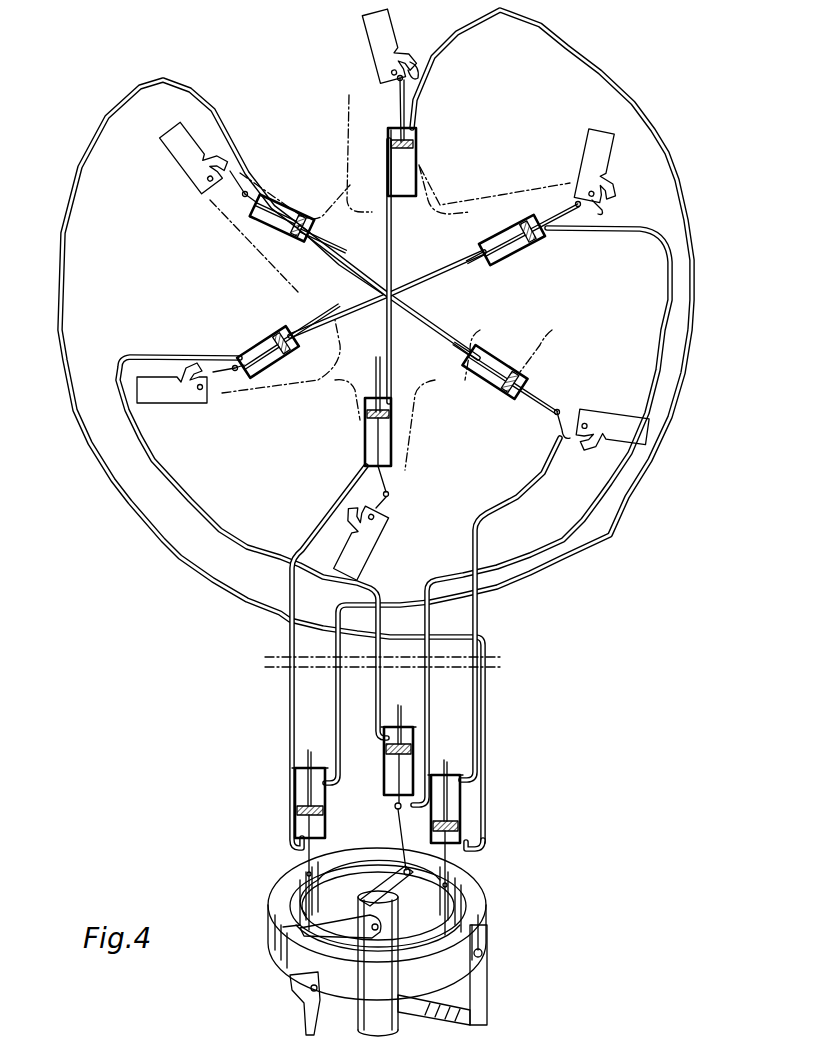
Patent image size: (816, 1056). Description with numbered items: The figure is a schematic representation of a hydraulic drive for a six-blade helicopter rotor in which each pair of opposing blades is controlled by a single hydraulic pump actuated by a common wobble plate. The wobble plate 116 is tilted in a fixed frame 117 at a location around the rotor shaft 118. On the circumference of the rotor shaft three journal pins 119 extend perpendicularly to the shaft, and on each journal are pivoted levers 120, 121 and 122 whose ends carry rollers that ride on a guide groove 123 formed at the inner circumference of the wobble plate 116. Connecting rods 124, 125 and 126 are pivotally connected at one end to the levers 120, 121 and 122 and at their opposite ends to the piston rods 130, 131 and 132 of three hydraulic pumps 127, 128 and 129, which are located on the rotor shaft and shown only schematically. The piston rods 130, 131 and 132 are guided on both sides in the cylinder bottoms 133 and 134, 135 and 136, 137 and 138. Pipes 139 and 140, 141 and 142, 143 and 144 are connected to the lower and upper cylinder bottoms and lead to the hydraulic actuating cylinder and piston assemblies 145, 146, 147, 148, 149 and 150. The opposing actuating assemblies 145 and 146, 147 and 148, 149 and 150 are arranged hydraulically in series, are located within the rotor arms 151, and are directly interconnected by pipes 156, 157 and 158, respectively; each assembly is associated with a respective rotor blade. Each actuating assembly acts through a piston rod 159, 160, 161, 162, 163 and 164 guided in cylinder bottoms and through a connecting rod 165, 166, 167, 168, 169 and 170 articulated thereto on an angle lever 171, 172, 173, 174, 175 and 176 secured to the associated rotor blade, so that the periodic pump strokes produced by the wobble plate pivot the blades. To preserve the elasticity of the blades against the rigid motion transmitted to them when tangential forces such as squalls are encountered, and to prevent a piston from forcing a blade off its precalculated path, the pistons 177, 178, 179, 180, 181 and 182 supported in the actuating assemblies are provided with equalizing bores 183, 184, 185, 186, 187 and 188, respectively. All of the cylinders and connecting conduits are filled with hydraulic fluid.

The wobble plate 116 is at (278, 900).
The fixed frame 117 is at (487, 978).
The rotor shaft 118 is at (372, 1026).
The journal pins 119 is at (380, 934).
The lever 120 is at (352, 930).
The lever 121 is at (425, 888).
The lever 122 is at (484, 952).
The guide groove 123 is at (358, 876).
The connecting rod 124 is at (300, 927).
The connecting rod 125 is at (402, 845).
The connecting rod 126 is at (468, 915).
The hydraulic pump 127 is at (295, 781).
The hydraulic pump 128 is at (385, 766).
The hydraulic pump 129 is at (462, 796).
The piston rod 130 is at (304, 850).
The piston rod 131 is at (401, 776).
The piston rod 132 is at (450, 866).
The cylinder bottom 133 is at (312, 855).
The cylinder bottom 134 is at (308, 760).
The cylinder bottom 135 is at (387, 790).
The cylinder bottom 136 is at (403, 722).
The cylinder bottom 137 is at (457, 850).
The cylinder bottom 138 is at (455, 776).
The pipe 139 is at (300, 553).
The pipe 140 is at (567, 47).
The pipe 141 is at (667, 298).
The pipe 142 is at (160, 455).
The pipe 143 is at (66, 190).
The pipe 144 is at (505, 505).
The hydraulic actuating cylinder and piston assembly 145 is at (365, 430).
The hydraulic actuating cylinder and piston assembly 146 is at (418, 165).
The hydraulic actuating cylinder and piston assembly 147 is at (260, 343).
The hydraulic actuating cylinder and piston assembly 148 is at (512, 258).
The hydraulic actuating cylinder and piston assembly 149 is at (262, 224).
The hydraulic actuating cylinder and piston assembly 150 is at (475, 372).
The rotor arms 151 is at (428, 186).
The pipe 156 is at (392, 255).
The pipe 157 is at (427, 278).
The pipe 158 is at (355, 266).
The piston rod 159 is at (542, 400).
The piston rod 160 is at (265, 205).
The piston rod 161 is at (246, 380).
The piston rod 162 is at (565, 222).
The piston rod 163 is at (397, 100).
The piston rod 164 is at (386, 466).
The connecting rod 165 is at (225, 362).
The connecting rod 166 is at (602, 211).
The connecting rod 167 is at (240, 180).
The connecting rod 168 is at (557, 436).
The connecting rod 169 is at (412, 68).
The connecting rod 170 is at (390, 496).
The angle lever 171 is at (160, 392).
The angle lever 172 is at (590, 145).
The angle lever 173 is at (186, 154).
The angle lever 174 is at (614, 418).
The angle lever 175 is at (368, 30).
The angle lever 176 is at (372, 556).
The piston 177 is at (375, 392).
The piston 178 is at (390, 145).
The piston 179 is at (296, 342).
The piston 180 is at (525, 228).
The piston 181 is at (303, 240).
The piston 182 is at (522, 375).
The equalizing bore 183 is at (366, 413).
The equalizing bore 184 is at (418, 136).
The equalizing bore 185 is at (293, 337).
The equalizing bore 186 is at (535, 242).
The equalizing bore 187 is at (299, 218).
The equalizing bore 188 is at (510, 392).